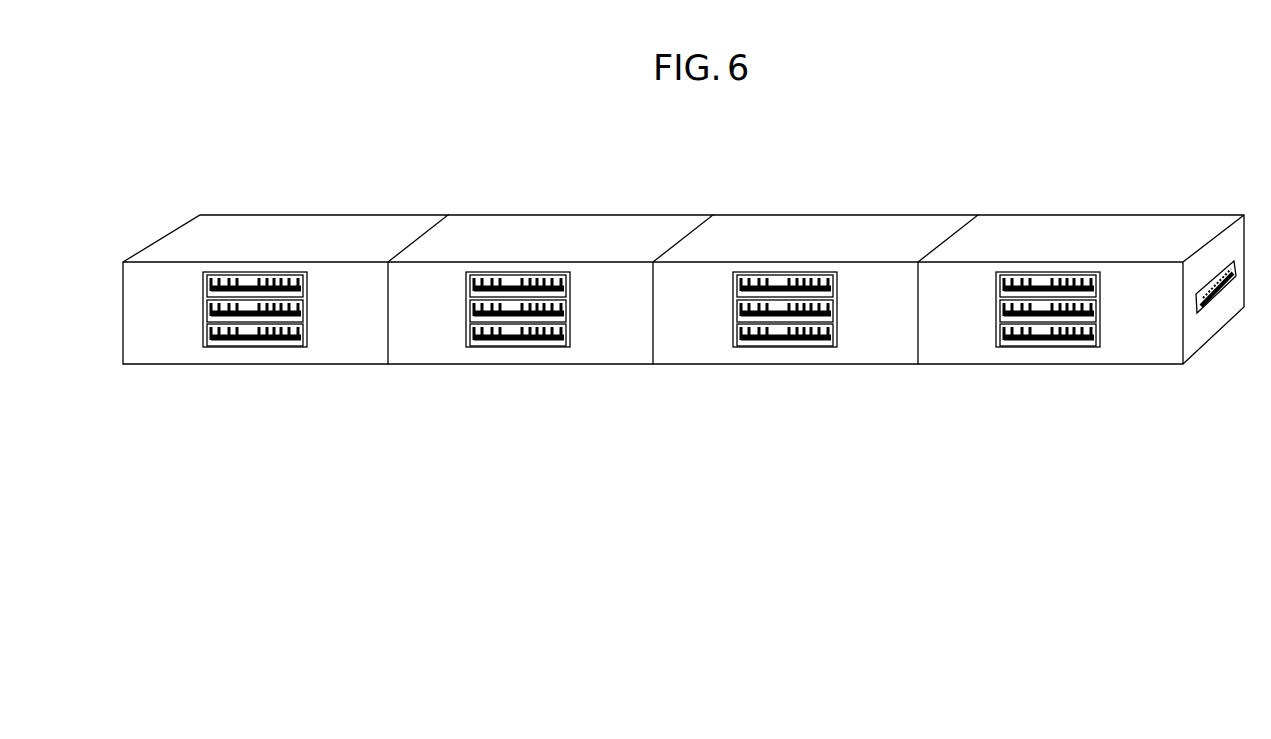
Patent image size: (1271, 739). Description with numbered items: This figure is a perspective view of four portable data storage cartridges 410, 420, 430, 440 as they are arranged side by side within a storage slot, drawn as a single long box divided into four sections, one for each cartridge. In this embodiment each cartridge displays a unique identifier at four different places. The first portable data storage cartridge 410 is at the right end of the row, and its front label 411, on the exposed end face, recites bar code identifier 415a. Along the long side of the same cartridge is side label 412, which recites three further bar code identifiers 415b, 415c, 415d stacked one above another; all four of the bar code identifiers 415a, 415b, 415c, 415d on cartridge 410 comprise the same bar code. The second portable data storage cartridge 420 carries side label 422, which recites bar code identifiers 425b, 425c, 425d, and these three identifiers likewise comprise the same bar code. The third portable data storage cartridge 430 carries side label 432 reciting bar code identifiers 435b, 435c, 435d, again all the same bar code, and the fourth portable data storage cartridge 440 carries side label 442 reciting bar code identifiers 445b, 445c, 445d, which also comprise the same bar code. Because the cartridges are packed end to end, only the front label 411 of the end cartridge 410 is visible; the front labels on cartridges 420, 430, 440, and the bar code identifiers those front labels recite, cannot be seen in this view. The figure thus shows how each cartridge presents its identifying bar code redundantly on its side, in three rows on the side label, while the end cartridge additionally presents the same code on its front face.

The portable data storage cartridge 410 is at (1053, 478).
The portable data storage cartridge 420 is at (787, 478).
The portable data storage cartridge 430 is at (509, 478).
The portable data storage cartridge 440 is at (243, 477).
The front label 411 is at (1215, 272).
The side label 412 is at (1048, 256).
The side label 422 is at (785, 252).
The side label 432 is at (518, 254).
The side label 442 is at (253, 260).
The bar code identifier 415a is at (1215, 302).
The bar code identifier 415b is at (1056, 373).
The bar code identifier 415c is at (1048, 372).
The bar code identifier 415d is at (1048, 368).
The bar code identifier 425b is at (791, 373).
The bar code identifier 425c is at (785, 372).
The bar code identifier 425d is at (784, 368).
The bar code identifier 435b is at (526, 373).
The bar code identifier 435c is at (518, 372).
The bar code identifier 435d is at (517, 368).
The bar code identifier 445b is at (302, 334).
The bar code identifier 445c is at (257, 318).
The bar code identifier 445d is at (220, 297).